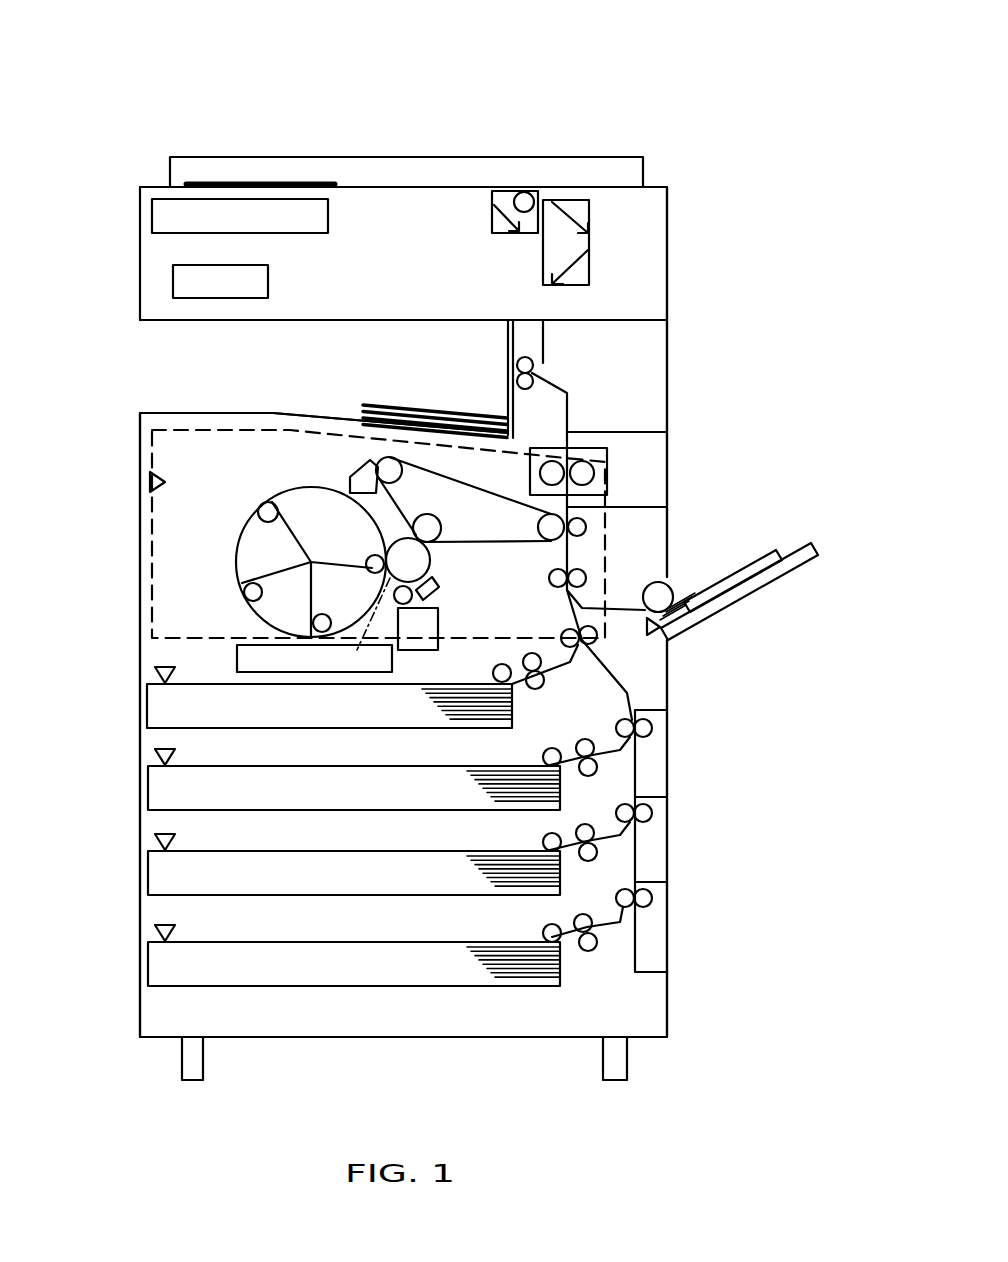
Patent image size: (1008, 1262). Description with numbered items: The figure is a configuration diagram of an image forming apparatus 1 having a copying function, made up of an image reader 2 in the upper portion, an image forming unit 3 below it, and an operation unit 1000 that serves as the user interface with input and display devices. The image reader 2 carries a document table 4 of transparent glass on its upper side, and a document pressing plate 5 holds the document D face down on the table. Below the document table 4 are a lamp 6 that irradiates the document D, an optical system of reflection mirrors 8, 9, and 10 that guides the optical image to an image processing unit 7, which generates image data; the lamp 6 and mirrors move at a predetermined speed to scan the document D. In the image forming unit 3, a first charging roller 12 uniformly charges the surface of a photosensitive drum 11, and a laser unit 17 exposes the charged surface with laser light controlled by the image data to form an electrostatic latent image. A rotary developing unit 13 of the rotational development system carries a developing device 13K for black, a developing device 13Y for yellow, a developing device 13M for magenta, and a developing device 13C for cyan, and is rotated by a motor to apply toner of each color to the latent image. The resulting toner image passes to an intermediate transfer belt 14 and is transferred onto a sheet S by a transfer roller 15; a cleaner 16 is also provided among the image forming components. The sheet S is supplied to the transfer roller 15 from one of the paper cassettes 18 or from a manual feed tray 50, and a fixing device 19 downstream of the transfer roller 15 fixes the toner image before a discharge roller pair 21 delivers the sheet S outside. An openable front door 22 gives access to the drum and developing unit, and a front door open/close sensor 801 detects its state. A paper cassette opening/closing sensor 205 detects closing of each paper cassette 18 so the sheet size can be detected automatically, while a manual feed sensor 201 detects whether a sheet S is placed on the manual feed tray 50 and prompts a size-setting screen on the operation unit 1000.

The image forming apparatus 1 is at (542, 70).
The image reader 2 is at (140, 190).
The image forming unit 3 is at (138, 422).
The document table 4 is at (442, 187).
The document pressing plate 5 is at (308, 157).
The lamp 6 is at (530, 192).
The image processing unit 7 is at (173, 283).
The reflection mirror 8 is at (503, 222).
The reflection mirror 9 is at (588, 218).
The reflection mirror 10 is at (575, 271).
The operation unit 1000 is at (152, 213).
The document D is at (262, 181).
The sheet S is at (372, 404).
The photosensitive drum 11 is at (430, 562).
The first charging roller 12 is at (425, 609).
The rotary developing unit 13 is at (260, 491).
The developing device 13K is at (303, 503).
The developing device 13C is at (253, 542).
The developing device 13Y is at (325, 586).
The developing device 13M is at (252, 615).
The intermediate transfer belt 14 is at (488, 492).
The transfer roller 15 is at (585, 527).
The cleaner 16 is at (433, 586).
The laser unit 17 is at (237, 662).
The paper cassette 18 is at (147, 710).
The fixing device 19 is at (607, 470).
The discharge roller pair 21 is at (535, 368).
The front door 22 is at (200, 430).
The manual feed tray 50 is at (818, 553).
The manual feed sensor 201 is at (648, 628).
The paper cassette opening/closing sensor 205 is at (153, 672).
The front door open/close sensor 801 is at (148, 482).